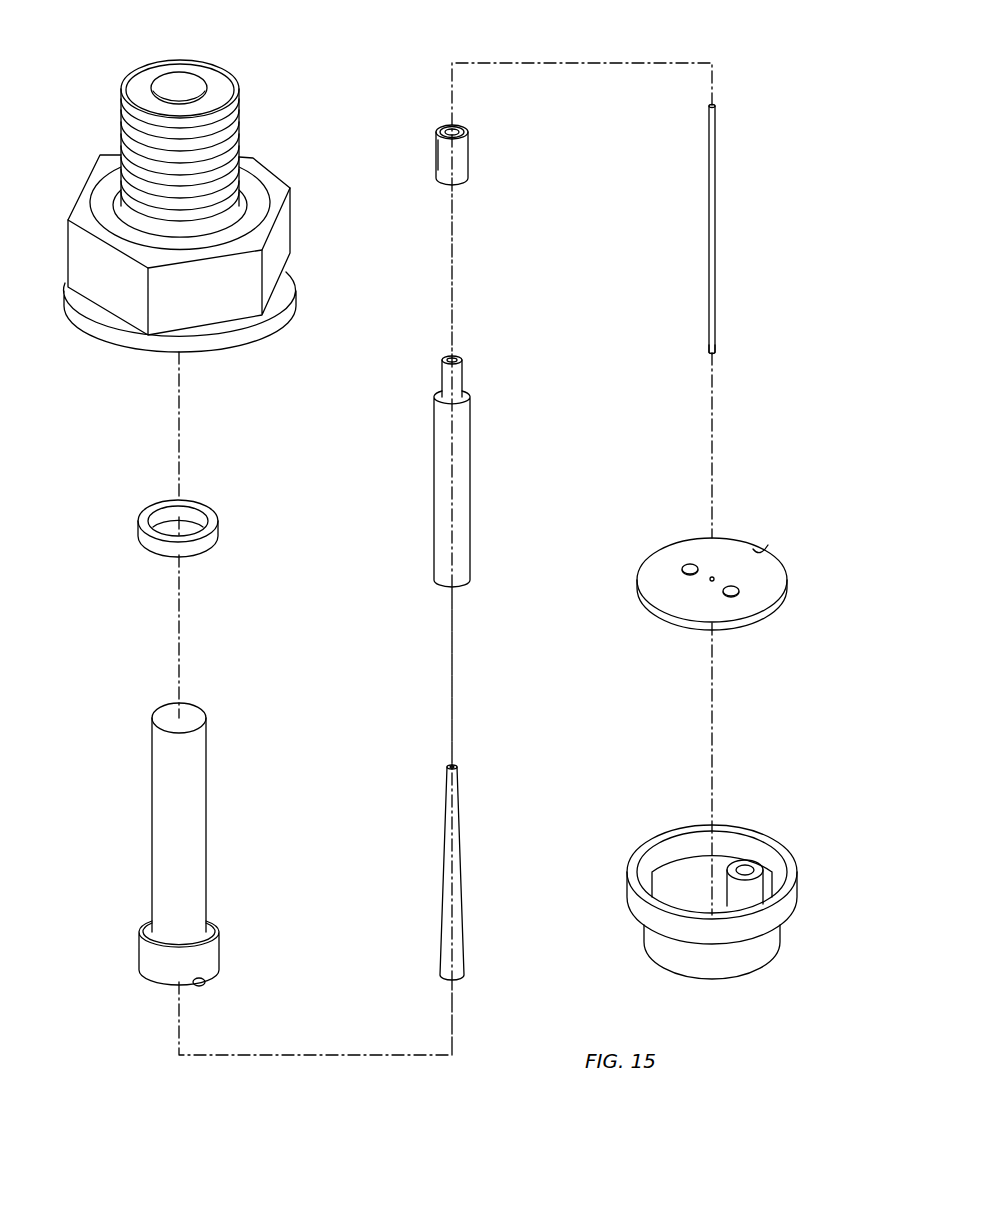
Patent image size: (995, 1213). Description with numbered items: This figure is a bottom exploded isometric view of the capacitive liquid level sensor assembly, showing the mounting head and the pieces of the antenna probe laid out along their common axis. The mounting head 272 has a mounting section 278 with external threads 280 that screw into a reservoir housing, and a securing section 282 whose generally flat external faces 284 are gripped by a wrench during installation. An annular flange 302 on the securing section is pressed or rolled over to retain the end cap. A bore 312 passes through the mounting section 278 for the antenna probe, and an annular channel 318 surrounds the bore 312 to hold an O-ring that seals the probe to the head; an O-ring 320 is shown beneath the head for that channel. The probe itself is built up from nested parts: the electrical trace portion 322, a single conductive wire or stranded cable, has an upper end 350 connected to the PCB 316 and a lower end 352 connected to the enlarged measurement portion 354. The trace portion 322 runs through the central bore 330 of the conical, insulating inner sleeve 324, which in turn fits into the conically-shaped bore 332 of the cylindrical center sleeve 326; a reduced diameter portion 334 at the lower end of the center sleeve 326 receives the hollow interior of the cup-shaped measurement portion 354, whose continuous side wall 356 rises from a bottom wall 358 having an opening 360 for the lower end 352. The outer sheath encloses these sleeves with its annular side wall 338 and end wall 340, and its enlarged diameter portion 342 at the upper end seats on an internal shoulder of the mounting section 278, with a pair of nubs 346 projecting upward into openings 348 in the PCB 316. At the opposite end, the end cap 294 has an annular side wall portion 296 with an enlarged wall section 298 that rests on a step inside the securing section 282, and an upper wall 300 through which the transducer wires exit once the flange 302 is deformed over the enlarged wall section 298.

The mounting head 272 is at (205, 204).
The mounting section 278 is at (197, 118).
The external threads 280 is at (118, 137).
The securing section 282 is at (275, 187).
The external faces 284 is at (275, 257).
The annular flange 302 is at (230, 337).
The bore 312 is at (188, 82).
The annular channel 318 is at (168, 93).
The ring seal 320 is at (210, 515).
The annular side wall 338 is at (217, 850).
The end wall 340 is at (192, 717).
The enlarged diameter portion 342 is at (213, 957).
The nubs 346 is at (203, 982).
The enlarged measurement portion 354 is at (455, 138).
The continuous side wall 356 is at (442, 155).
The bottom wall 358 is at (448, 127).
The opening 360 is at (457, 128).
The center sleeve 326 is at (496, 446).
The conically-shaped bore 332 is at (458, 355).
The reduced diameter portion 334 is at (458, 382).
The inner sleeve 324 is at (488, 852).
The central bore 330 is at (452, 765).
The electrical trace portion 322 is at (750, 228).
The lower end 352 is at (713, 110).
The upper end 350 is at (713, 347).
The PCB 316 is at (692, 584).
The openings 348 is at (688, 568).
The end cap 294 is at (700, 916).
The enlarged wall section 298 is at (642, 850).
The upper wall 300 is at (703, 978).
The annular side wall portion 296 is at (755, 955).